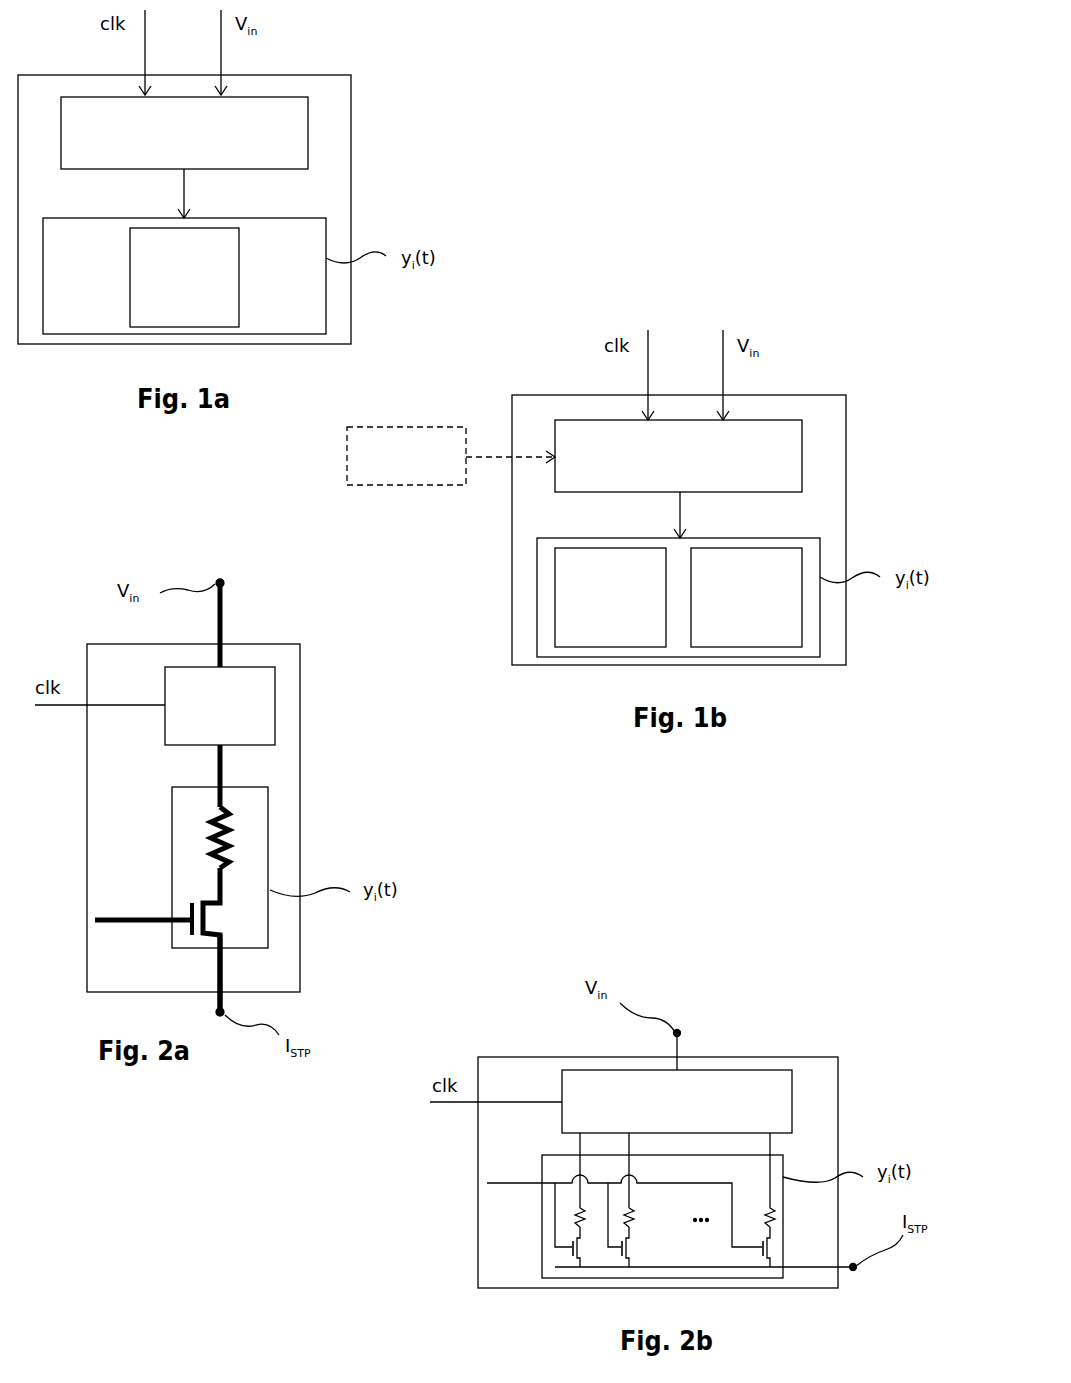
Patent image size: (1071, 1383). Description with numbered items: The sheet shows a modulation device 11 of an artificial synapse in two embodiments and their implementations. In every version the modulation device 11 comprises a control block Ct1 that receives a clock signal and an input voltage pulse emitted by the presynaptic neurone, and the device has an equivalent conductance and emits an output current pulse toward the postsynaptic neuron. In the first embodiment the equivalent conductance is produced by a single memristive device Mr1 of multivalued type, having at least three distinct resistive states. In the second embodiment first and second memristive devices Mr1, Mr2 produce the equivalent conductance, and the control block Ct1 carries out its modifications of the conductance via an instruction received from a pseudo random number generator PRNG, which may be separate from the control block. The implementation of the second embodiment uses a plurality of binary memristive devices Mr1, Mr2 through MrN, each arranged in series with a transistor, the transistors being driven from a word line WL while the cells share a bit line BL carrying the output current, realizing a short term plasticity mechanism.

In FIG. 1A, the modulation device 11 is at (310, 75).
In FIG. 1B, the modulation device 11 is at (797, 395).
In FIG. 2A, the modulation device 11 is at (252, 644).
In FIG. 2B, the modulation device 11 is at (772, 1057).
In FIG. 1A, the control block Ct1 is at (184, 133).
In FIG. 1B, the control block Ct1 is at (678, 456).
In FIG. 2A, the control block Ct1 is at (220, 706).
In FIG. 2B, the control block Ct1 is at (677, 1101).
In FIG. 1A, the memristive device Mr1 is at (184, 277).
In FIG. 1B, the memristive device Mr1 is at (610, 597).
In FIG. 2A, the memristive device Mr1 is at (227, 836).
In FIG. 2B, the memristive device Mr1 is at (577, 1223).
In FIG. 1B, the second memristive device Mr2 is at (746, 597).
In FIG. 2B, the second memristive device Mr2 is at (630, 1223).
In FIG. 2B, the N-th memristive device MrN is at (775, 1227).
In FIG. 1B, the pseudo random number generator PRNG is at (451, 456).
In FIG. 2A, the word line WL is at (143, 894).
In FIG. 2B, the word line WL is at (624, 1196).
In FIG. 2A, the bit line BL is at (250, 973).
In FIG. 2B, the bit line BL is at (704, 1249).